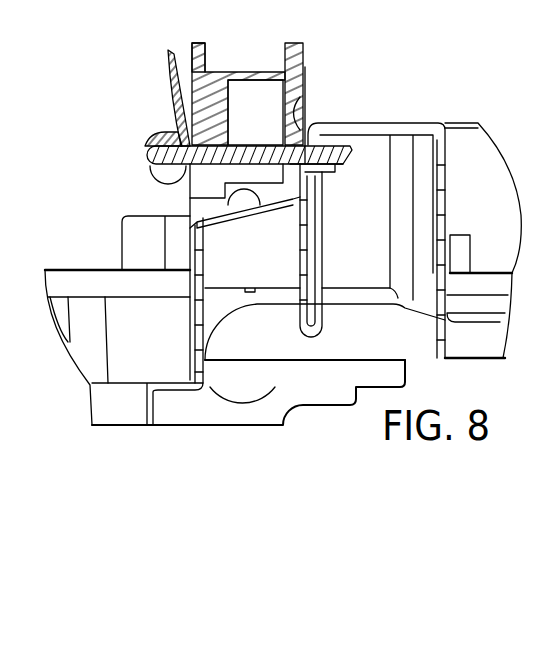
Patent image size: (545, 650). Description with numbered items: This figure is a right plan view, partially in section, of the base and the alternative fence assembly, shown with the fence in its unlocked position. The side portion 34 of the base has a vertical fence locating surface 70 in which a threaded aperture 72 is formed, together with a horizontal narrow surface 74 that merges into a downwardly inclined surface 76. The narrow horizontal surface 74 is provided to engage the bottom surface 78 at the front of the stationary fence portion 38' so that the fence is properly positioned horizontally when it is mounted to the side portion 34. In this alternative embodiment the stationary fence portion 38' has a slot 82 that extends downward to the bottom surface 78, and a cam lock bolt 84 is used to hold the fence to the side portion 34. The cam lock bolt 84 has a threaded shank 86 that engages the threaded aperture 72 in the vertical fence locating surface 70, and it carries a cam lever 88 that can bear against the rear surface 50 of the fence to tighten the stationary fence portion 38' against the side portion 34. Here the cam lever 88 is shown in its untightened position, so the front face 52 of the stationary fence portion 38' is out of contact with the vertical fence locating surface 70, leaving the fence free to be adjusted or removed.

The side portion 34 is at (398, 123).
The stationary fence portion 38' is at (238, 83).
The rear surface 50 is at (192, 58).
The front face 52 is at (304, 44).
The vertical fence locating surface 70 is at (296, 107).
The aperture 72 is at (346, 153).
The horizontal narrow surface 74 is at (320, 177).
The downwardly inclined surface 76 is at (253, 203).
The bottom surface 78 is at (77, 9).
The slot 82 is at (30, 9).
The cam lock bolt 84 is at (143, 129).
The threaded shank 86 is at (252, 147).
The cam lever 88 is at (174, 90).